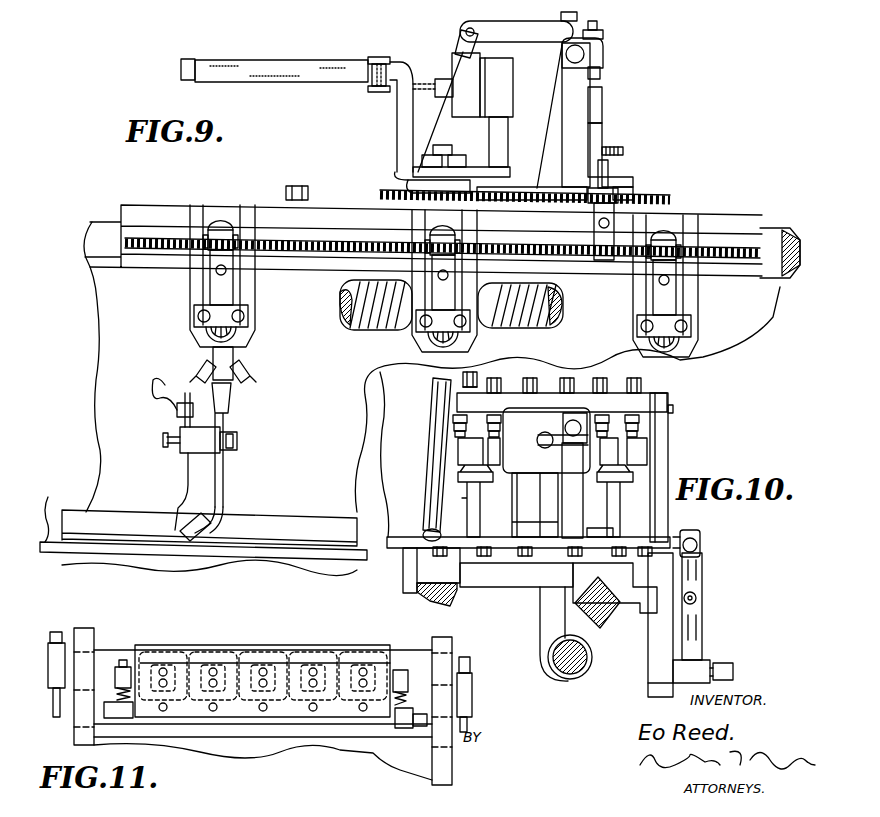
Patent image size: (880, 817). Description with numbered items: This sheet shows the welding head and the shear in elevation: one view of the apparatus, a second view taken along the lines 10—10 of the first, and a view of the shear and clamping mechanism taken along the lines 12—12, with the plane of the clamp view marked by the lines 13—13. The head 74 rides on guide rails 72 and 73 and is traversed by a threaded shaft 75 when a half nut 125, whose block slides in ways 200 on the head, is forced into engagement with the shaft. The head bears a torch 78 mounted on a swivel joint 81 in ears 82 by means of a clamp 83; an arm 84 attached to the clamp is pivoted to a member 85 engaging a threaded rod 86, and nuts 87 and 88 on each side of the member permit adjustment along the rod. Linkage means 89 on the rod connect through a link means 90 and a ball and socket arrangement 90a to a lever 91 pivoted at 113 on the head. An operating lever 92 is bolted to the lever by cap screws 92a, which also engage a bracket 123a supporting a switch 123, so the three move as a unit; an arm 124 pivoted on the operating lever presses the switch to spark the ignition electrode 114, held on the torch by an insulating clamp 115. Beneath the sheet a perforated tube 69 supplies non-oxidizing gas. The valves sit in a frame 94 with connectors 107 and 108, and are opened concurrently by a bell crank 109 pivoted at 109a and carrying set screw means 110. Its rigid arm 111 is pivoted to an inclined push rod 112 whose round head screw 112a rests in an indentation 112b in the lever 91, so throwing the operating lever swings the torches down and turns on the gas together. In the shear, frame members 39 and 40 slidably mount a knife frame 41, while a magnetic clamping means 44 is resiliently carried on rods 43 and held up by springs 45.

In FIG. 9, the section line 10— 10 is at (114, 362).
In FIG. 9, the section line 13— 13 is at (771, 392).
In FIG. 11, the section line 12— 12 is at (334, 771).
In FIG. 9, the arm 124 is at (240, 62).
In FIG. 10, the arm 124 is at (592, 420).
In FIG. 9, the operating lever 92 is at (182, 70).
In FIG. 10, the operating lever 92 is at (562, 455).
In FIG. 9, the ball and socket arrangement 90a is at (396, 186).
In FIG. 9, the pivot 113 is at (396, 172).
In FIG. 10, the pivot 113 is at (606, 535).
In FIG. 9, the cap screws 92a is at (443, 157).
In FIG. 9, the rigid arm 111 is at (508, 30).
In FIG. 10, the rigid arm 111 is at (486, 394).
In FIG. 9, the push rod 112 is at (461, 46).
In FIG. 10, the push rod 112 is at (432, 476).
In FIG. 9, the switch 123 is at (493, 84).
In FIG. 10, the switch 123 is at (546, 440).
In FIG. 9, the bracket 123a is at (502, 140).
In FIG. 9, the link means 90 is at (537, 190).
In FIG. 9, the frame 94 is at (596, 96).
In FIG. 10, the frame 94 is at (668, 466).
In FIG. 9, the bell crank 109 is at (605, 56).
In FIG. 10, the bell crank 109 is at (668, 426).
In FIG. 9, the set screw means 110 is at (598, 32).
In FIG. 9, the pivot 109a is at (601, 72).
In FIG. 10, the pivot 109a is at (674, 411).
In FIG. 9, the connector 108 is at (625, 152).
In FIG. 9, the connector 107 is at (625, 182).
In FIG. 9, the head 74 is at (325, 202).
In FIG. 9, the guide rail 72 is at (778, 233).
In FIG. 10, the guide rail 72 is at (606, 622).
In FIG. 9, the linkage means 89 is at (640, 215).
In FIG. 9, the ears 82 is at (697, 306).
In FIG. 10, the ears 82 is at (648, 673).
In FIG. 9, the member 85 is at (668, 238).
In FIG. 9, the arm 84 is at (672, 287).
In FIG. 10, the arm 84 is at (702, 636).
In FIG. 9, the clamp 83 is at (695, 326).
In FIG. 10, the clamp 83 is at (724, 668).
In FIG. 9, the swivel joint 81 is at (680, 345).
In FIG. 9, the nut 87 is at (430, 244).
In FIG. 9, the nut 88 is at (466, 244).
In FIG. 9, the threaded rod 86 is at (312, 252).
In FIG. 10, the threaded rod 86 is at (700, 598).
In FIG. 9, the threaded shaft 75 is at (560, 306).
In FIG. 10, the threaded shaft 75 is at (592, 657).
In FIG. 9, the torch 78 is at (234, 360).
In FIG. 9, the insulating clamp 115 is at (222, 437).
In FIG. 9, the ignition electrode 114 is at (180, 485).
In FIG. 9, the tube 69 is at (407, 431).
In FIG. 10, the round head screw 112a is at (426, 530).
In FIG. 10, the lever 91 is at (395, 540).
In FIG. 10, the indentation 112b is at (404, 565).
In FIG. 10, the ways 200 is at (495, 567).
In FIG. 10, the guide rail 73 is at (452, 599).
In FIG. 10, the half nut 125 is at (540, 615).
In FIG. 11, the frame member 40 is at (90, 633).
In FIG. 11, the knife frame 41 is at (115, 654).
In FIG. 11, the rod 43 is at (398, 670).
In FIG. 11, the magnetic clamping means 44 is at (215, 645).
In FIG. 11, the frame member 39 is at (453, 651).
In FIG. 11, the spring 45 is at (405, 705).